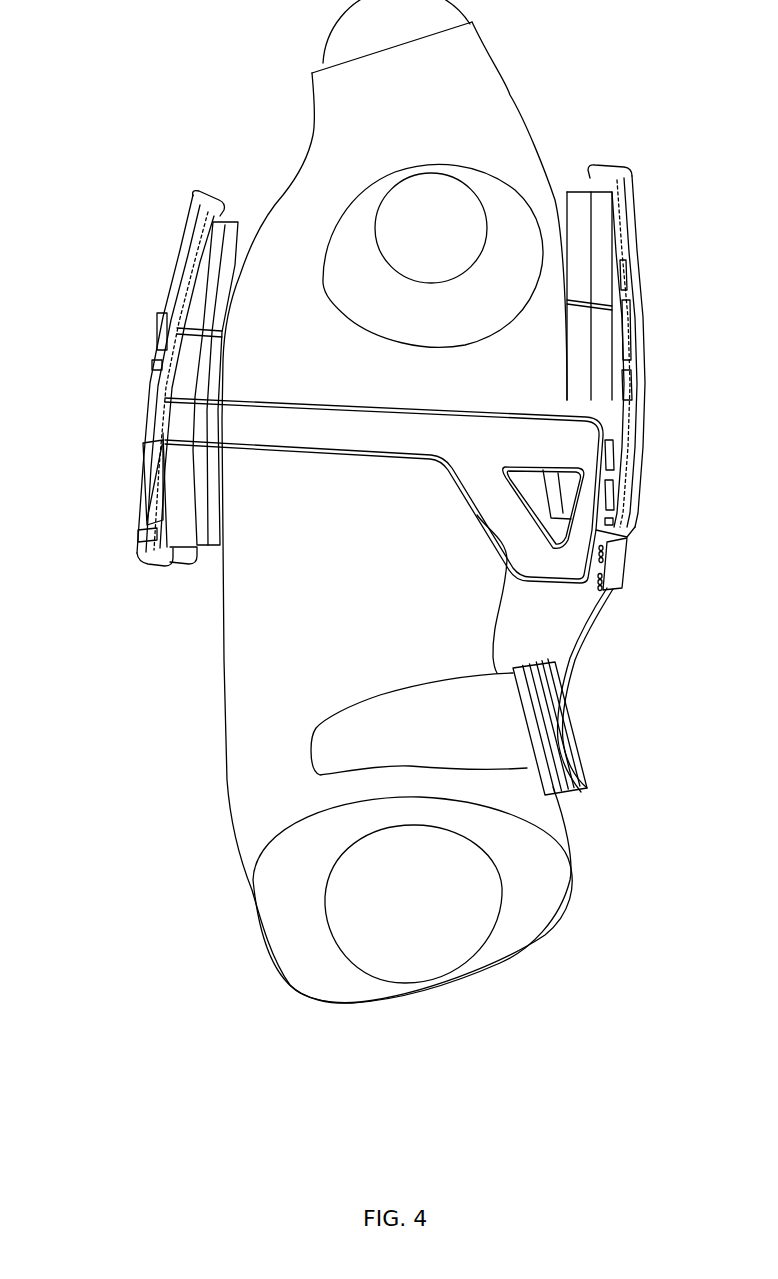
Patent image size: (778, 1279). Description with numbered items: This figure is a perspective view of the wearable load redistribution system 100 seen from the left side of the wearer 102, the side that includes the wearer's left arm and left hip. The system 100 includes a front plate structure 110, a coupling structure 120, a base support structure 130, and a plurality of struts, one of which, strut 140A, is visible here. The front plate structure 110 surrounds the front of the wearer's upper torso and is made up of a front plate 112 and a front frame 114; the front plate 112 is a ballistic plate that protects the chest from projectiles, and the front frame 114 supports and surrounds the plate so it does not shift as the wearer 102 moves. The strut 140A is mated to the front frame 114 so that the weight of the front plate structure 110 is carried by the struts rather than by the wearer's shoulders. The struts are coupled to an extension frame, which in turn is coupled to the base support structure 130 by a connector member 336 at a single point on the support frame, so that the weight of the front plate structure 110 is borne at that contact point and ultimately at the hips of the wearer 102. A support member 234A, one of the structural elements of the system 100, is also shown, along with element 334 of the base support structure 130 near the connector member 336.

The wearable load redistribution system 100 is at (78, 447).
The wearer 102 is at (507, 90).
The front plate structure 110 is at (152, 356).
The front plate 112 is at (187, 557).
The front frame 114 is at (147, 548).
The coupling structure 120 is at (642, 211).
The base support structure 130 is at (575, 799).
The strut 140A is at (365, 428).
The support member 234A is at (506, 682).
The latch 334 is at (618, 566).
The connector member 336 is at (590, 660).